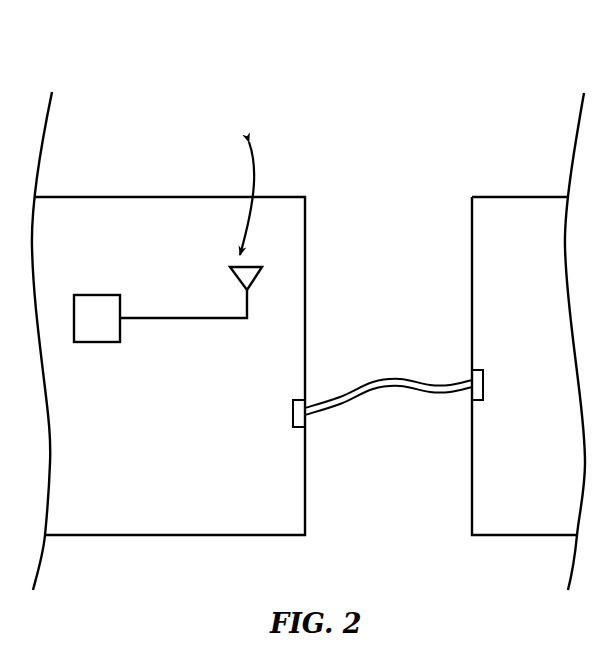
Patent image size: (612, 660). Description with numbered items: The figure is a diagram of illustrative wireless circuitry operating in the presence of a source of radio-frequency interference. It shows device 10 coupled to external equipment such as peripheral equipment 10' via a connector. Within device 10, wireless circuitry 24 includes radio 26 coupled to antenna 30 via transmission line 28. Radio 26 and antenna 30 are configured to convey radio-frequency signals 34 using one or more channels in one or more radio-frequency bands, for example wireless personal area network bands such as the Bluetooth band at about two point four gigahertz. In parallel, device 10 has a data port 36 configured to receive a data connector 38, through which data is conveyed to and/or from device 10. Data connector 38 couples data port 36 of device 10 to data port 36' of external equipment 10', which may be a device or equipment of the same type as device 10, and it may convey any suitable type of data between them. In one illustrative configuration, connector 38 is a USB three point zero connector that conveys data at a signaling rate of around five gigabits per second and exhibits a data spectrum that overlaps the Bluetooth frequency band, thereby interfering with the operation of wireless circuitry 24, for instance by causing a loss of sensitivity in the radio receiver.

The device 10 is at (139, 308).
The peripheral equipment 10' is at (518, 308).
The wireless circuitry 24 is at (181, 357).
The radio 26 is at (97, 318).
The transmission line 28 is at (179, 315).
The antenna 30 is at (245, 275).
The radio-frequency signals 34 is at (258, 168).
The data port 36 is at (263, 414).
The data port 36' is at (516, 385).
The data connector 38 is at (382, 391).